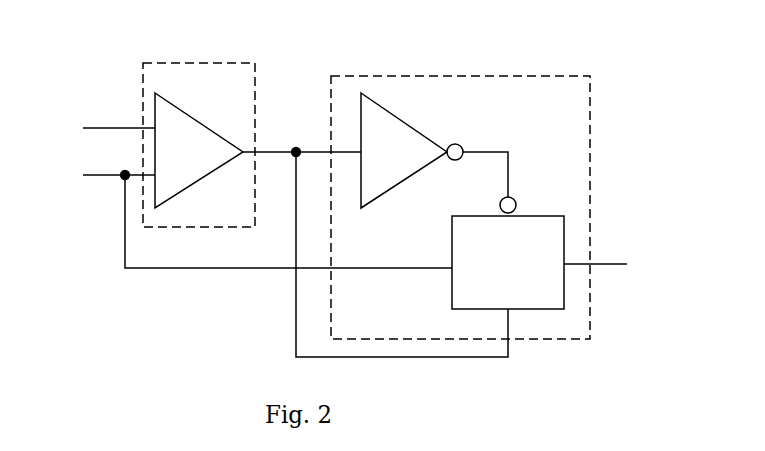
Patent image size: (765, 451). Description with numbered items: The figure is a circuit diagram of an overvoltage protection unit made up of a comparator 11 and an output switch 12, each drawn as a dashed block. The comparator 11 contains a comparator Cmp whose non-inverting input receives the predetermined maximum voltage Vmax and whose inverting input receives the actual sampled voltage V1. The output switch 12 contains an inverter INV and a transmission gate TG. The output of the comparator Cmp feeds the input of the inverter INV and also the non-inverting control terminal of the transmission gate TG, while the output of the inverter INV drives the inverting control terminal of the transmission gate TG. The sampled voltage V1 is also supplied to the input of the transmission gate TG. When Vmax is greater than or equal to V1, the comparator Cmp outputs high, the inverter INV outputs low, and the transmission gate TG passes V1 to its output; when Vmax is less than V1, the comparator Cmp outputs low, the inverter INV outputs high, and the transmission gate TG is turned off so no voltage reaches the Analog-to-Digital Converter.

The comparator 11 is at (202, 123).
The output switch 12 is at (460, 181).
The comparator CMP Cmp is at (199, 150).
The inverter INV is at (412, 150).
The transmission gate TG is at (508, 253).
The predetermined maximum voltage Vmax is at (111, 115).
The actual sampled voltage V1 is at (262, 211).